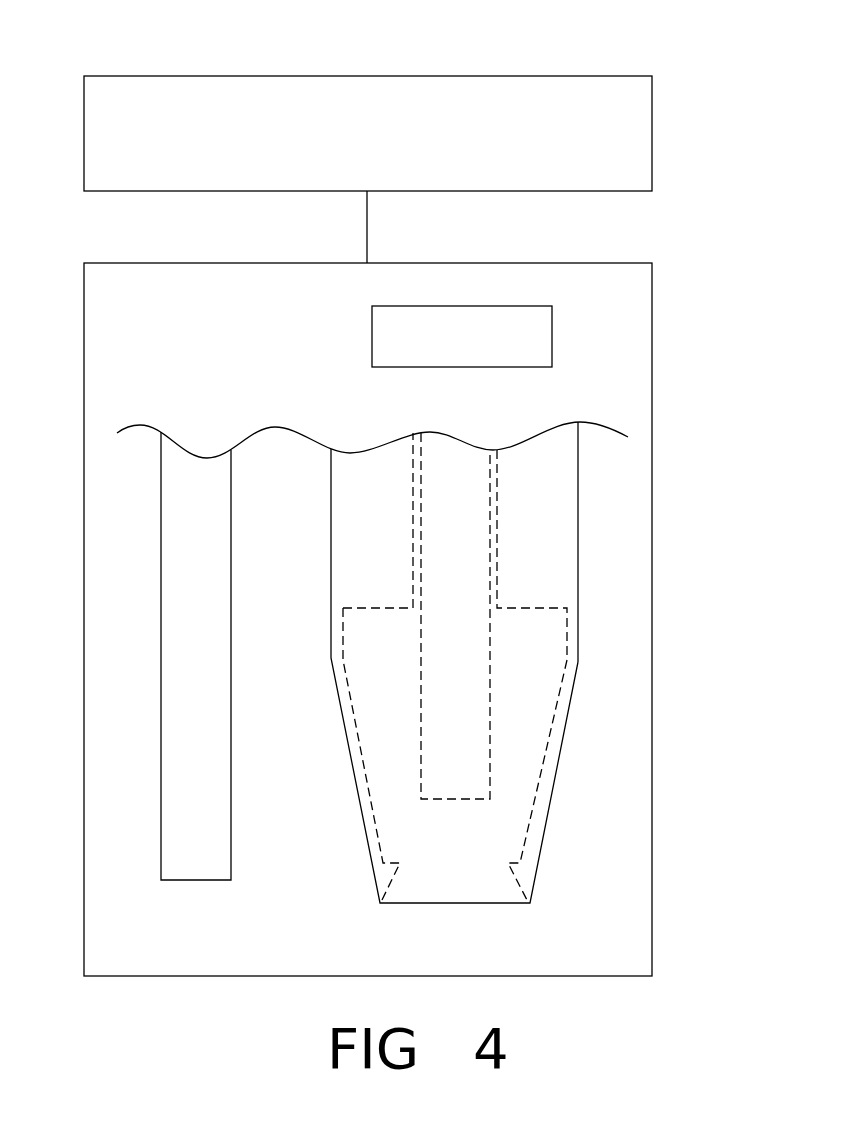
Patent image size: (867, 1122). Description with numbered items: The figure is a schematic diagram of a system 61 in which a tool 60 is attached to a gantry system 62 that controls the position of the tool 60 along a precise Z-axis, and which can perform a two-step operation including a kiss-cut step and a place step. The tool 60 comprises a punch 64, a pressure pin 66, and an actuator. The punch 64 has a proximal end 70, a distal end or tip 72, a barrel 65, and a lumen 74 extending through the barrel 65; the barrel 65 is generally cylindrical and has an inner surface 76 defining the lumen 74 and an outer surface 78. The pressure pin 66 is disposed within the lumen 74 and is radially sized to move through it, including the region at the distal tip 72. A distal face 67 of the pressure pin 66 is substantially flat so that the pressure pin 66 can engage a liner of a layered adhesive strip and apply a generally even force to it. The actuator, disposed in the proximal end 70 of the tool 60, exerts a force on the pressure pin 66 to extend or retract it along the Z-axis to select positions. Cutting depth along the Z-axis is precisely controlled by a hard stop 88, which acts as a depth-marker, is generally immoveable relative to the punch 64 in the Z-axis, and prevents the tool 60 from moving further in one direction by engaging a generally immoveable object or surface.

The tool 60 is at (637, 322).
The system 61 is at (712, 101).
The gantry system 62 is at (628, 163).
The punch 64 is at (612, 488).
The barrel 65 is at (563, 567).
The pressure pin 66 is at (474, 689).
The distal face 67 is at (460, 799).
The proximal end 70 is at (523, 415).
The distal tip 72 is at (478, 897).
The lumen 74 is at (437, 872).
The inner surface 76 is at (546, 777).
The outer surface 78 is at (565, 737).
The hard stop 88 is at (175, 657).